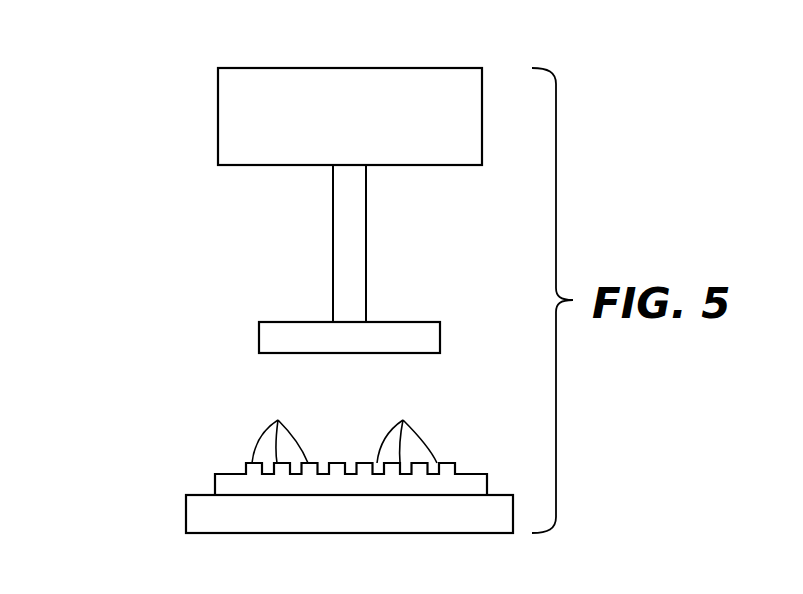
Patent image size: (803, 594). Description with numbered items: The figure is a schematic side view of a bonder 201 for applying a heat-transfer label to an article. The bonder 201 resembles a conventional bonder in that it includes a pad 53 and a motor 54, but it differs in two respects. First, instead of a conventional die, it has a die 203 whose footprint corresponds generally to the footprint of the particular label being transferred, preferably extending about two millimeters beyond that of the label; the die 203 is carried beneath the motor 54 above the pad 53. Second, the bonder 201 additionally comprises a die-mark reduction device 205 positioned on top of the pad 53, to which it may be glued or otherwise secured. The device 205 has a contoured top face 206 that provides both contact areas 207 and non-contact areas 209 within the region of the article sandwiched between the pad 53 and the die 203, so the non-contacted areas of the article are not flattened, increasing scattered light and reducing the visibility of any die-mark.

The bonder 201 is at (112, 214).
The motor 54 is at (292, 82).
The die 203 is at (307, 332).
The die-mark reduction device 205 is at (218, 412).
The top face 206 is at (228, 473).
The contact areas 207 is at (280, 430).
The non-contact areas 209 is at (407, 430).
The pad 53 is at (185, 515).